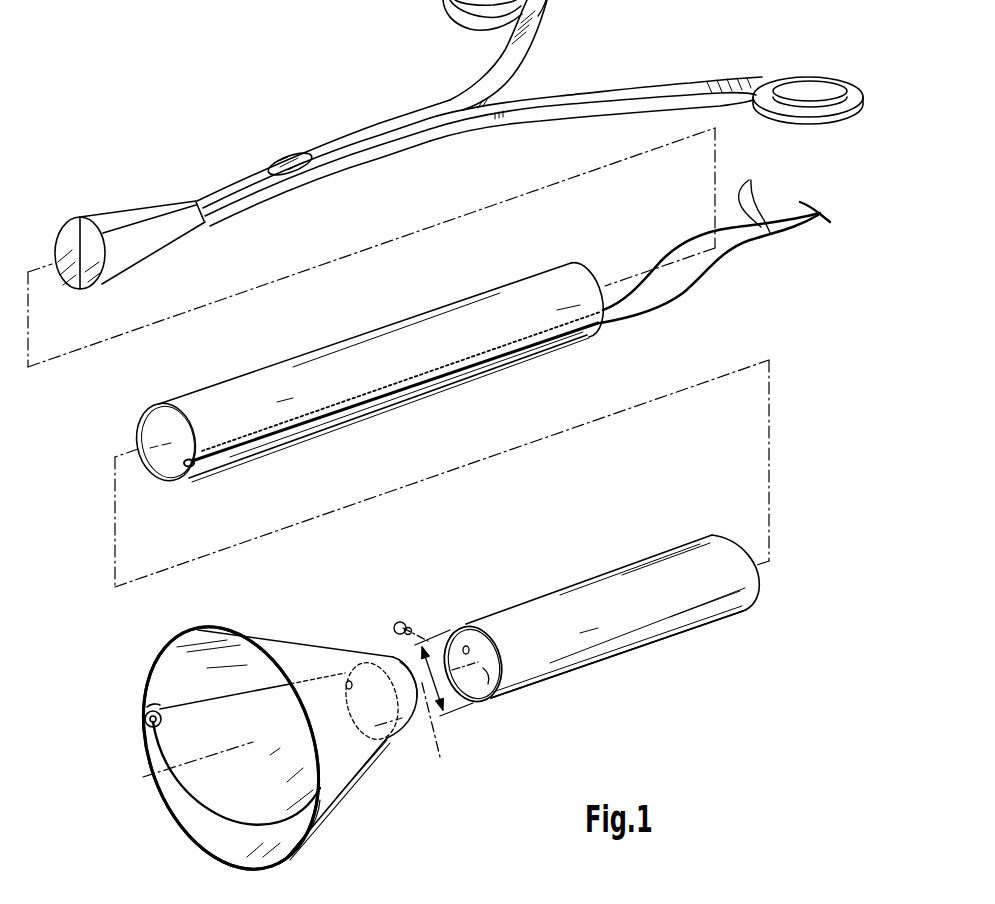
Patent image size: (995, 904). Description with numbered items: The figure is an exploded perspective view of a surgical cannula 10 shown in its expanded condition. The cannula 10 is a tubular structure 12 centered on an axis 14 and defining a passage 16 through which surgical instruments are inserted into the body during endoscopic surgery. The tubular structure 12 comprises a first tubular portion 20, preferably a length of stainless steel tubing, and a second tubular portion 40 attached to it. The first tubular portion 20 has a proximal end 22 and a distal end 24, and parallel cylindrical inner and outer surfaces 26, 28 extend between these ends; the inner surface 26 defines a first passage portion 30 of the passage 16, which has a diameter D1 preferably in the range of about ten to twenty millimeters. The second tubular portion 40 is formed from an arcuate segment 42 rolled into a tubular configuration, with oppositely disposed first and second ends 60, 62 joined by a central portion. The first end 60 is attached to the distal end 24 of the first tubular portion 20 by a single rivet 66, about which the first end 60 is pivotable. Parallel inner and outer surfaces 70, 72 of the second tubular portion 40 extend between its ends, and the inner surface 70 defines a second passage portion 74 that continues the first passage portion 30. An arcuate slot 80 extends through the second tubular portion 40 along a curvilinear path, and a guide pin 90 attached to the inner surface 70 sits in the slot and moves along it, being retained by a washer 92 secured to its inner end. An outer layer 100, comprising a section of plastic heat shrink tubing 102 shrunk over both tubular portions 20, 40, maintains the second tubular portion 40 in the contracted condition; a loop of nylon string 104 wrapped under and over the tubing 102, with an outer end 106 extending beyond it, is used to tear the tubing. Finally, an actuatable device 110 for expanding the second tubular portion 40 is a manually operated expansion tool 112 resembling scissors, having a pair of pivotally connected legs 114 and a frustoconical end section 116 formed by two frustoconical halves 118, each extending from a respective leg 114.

The cannula 10 is at (100, 435).
The tubular structure 12 is at (502, 707).
The axis 14 is at (440, 758).
The passage 16 is at (486, 652).
The first tubular portion 20 is at (632, 652).
The proximal end 22 is at (750, 582).
The distal end 24 is at (447, 636).
The inner surface 26 is at (458, 634).
The outer surface 28 is at (585, 597).
The first passage portion 30 is at (487, 675).
The second tubular portion 40 is at (360, 793).
The arcuate segment 42 is at (285, 850).
The first end 60 is at (420, 706).
The second end 62 is at (200, 825).
The rivet 66 is at (400, 621).
The inner surface 70 is at (237, 845).
The outer surface 72 is at (337, 790).
The second passage portion 74 is at (254, 739).
The arcuate slot 80 is at (167, 760).
The guide pin 90 is at (157, 707).
The washer 92 is at (140, 700).
The outer layer 100 is at (467, 297).
The plastic tubing 102 is at (575, 281).
The nylon string 104 is at (673, 306).
The outer end 106 is at (760, 195).
The actuatable device 110 is at (243, 178).
The expansion tool 112 is at (372, 125).
The legs 114 is at (530, 17).
The frustoconical end section 116 is at (148, 259).
The frustoconical halves 118 is at (94, 243).
The diameter D1 is at (415, 675).